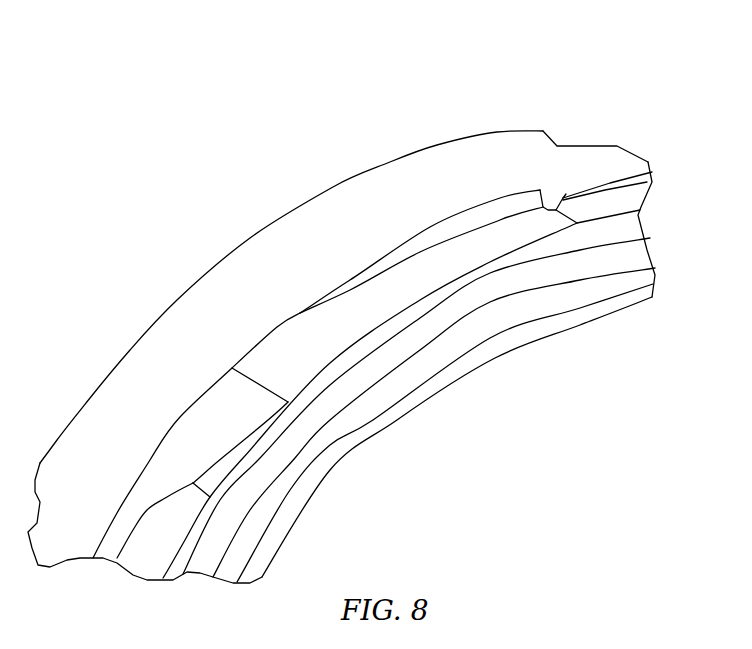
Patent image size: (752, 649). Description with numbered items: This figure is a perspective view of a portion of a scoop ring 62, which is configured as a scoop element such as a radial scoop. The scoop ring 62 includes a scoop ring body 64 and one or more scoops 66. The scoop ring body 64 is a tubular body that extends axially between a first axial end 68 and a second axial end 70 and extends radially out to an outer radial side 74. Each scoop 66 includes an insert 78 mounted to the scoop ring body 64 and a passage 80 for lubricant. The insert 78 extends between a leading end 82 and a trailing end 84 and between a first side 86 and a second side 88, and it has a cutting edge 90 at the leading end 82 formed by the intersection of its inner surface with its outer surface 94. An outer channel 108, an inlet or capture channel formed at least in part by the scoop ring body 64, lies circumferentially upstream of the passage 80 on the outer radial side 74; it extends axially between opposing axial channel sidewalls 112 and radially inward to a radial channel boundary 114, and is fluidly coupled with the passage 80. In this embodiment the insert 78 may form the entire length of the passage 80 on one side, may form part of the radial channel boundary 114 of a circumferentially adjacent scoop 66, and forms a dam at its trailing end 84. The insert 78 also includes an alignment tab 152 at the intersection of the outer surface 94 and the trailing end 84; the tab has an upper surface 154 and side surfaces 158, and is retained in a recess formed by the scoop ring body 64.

The scoop ring 62 is at (617, 80).
The scoop ring body 64 is at (500, 140).
The scoop 66 is at (105, 408).
The first axial end 68 is at (495, 358).
The second axial end 70 is at (335, 187).
The outer radial side 74 is at (444, 182).
The insert 78 is at (315, 343).
The passage 80 is at (190, 467).
The leading end 82 is at (218, 362).
The trailing end 84 is at (618, 214).
The first side 86 is at (353, 353).
The second side 88 is at (267, 330).
The edge 90 is at (250, 386).
The outer surface 94 is at (265, 363).
The outer channel 108 is at (572, 185).
The axial channel sidewalls 112 is at (389, 175).
The radial channel boundary 114 is at (357, 318).
The alignment tab 152 is at (555, 185).
The upper surface 154 is at (560, 222).
The side surfaces 158 is at (538, 196).